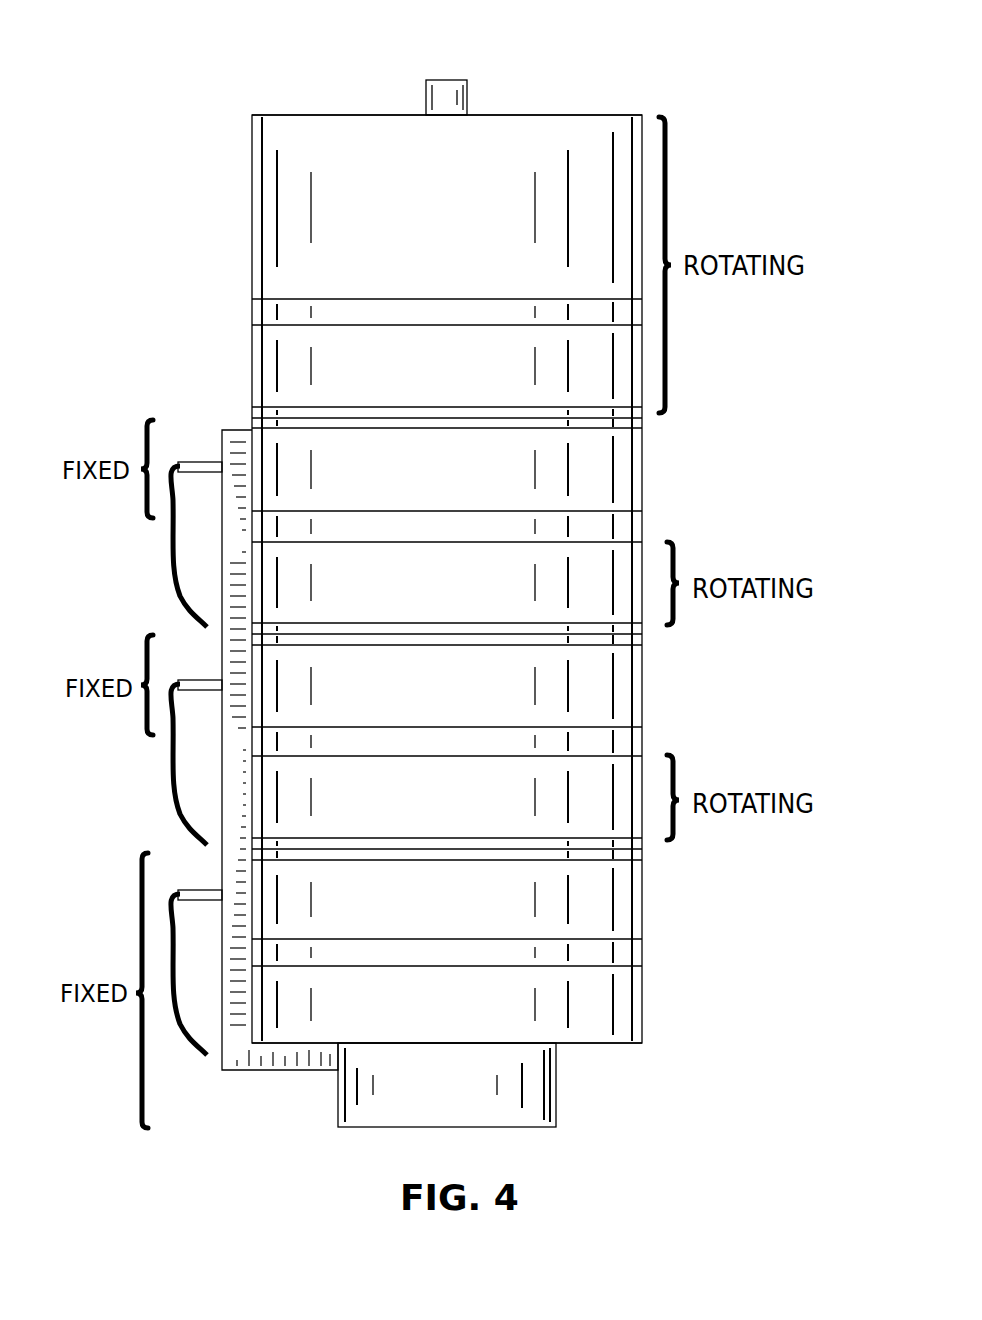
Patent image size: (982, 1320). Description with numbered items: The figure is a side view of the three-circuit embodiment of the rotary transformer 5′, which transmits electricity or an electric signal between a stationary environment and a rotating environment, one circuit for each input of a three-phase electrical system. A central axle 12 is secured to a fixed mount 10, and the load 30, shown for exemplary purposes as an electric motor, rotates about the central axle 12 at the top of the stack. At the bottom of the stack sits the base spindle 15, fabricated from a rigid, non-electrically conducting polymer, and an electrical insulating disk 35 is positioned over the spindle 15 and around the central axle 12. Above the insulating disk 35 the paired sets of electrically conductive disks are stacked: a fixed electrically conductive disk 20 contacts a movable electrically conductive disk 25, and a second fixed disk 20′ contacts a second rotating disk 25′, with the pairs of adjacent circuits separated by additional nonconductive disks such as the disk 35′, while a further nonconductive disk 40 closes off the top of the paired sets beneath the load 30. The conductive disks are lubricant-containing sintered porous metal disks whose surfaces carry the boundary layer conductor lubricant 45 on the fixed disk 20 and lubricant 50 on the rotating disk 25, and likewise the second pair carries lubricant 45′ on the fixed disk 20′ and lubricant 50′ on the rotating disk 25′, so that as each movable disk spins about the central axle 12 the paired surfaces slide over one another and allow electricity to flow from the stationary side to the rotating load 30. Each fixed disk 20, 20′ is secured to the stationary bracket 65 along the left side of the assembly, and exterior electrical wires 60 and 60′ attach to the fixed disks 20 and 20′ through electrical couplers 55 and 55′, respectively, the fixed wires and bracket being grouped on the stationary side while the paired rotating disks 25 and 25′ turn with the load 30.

The rotary transformer 5′ is at (146, 75).
The central axle 12 is at (450, 80).
The load 30 is at (252, 212).
The nonconductive disk 40 is at (252, 318).
The rotating electrically conductive disk 25′ is at (643, 562).
The bearing 50′ is at (643, 628).
The bearing 45′ is at (643, 645).
The fixed electrically conductive disk 20′ is at (643, 698).
The nonconductive disk 35′ is at (643, 742).
The movable electrically conductive disk 25 is at (643, 797).
The BLC/lubricant 50 is at (643, 843).
The BLC/lubricant 45 is at (643, 855).
The fixed electrically conductive disk 20 is at (643, 922).
The electrical insulating disk 35 is at (643, 955).
The base spindle 15 is at (643, 1030).
The fixed mount 10 is at (556, 1087).
The stationary bracket 65 is at (222, 585).
The electrical coupler 55′ is at (197, 680).
The exterior electrical wire 60′ is at (173, 793).
The electrical coupler 55 is at (200, 890).
The exterior electrical wire 60 is at (188, 1035).